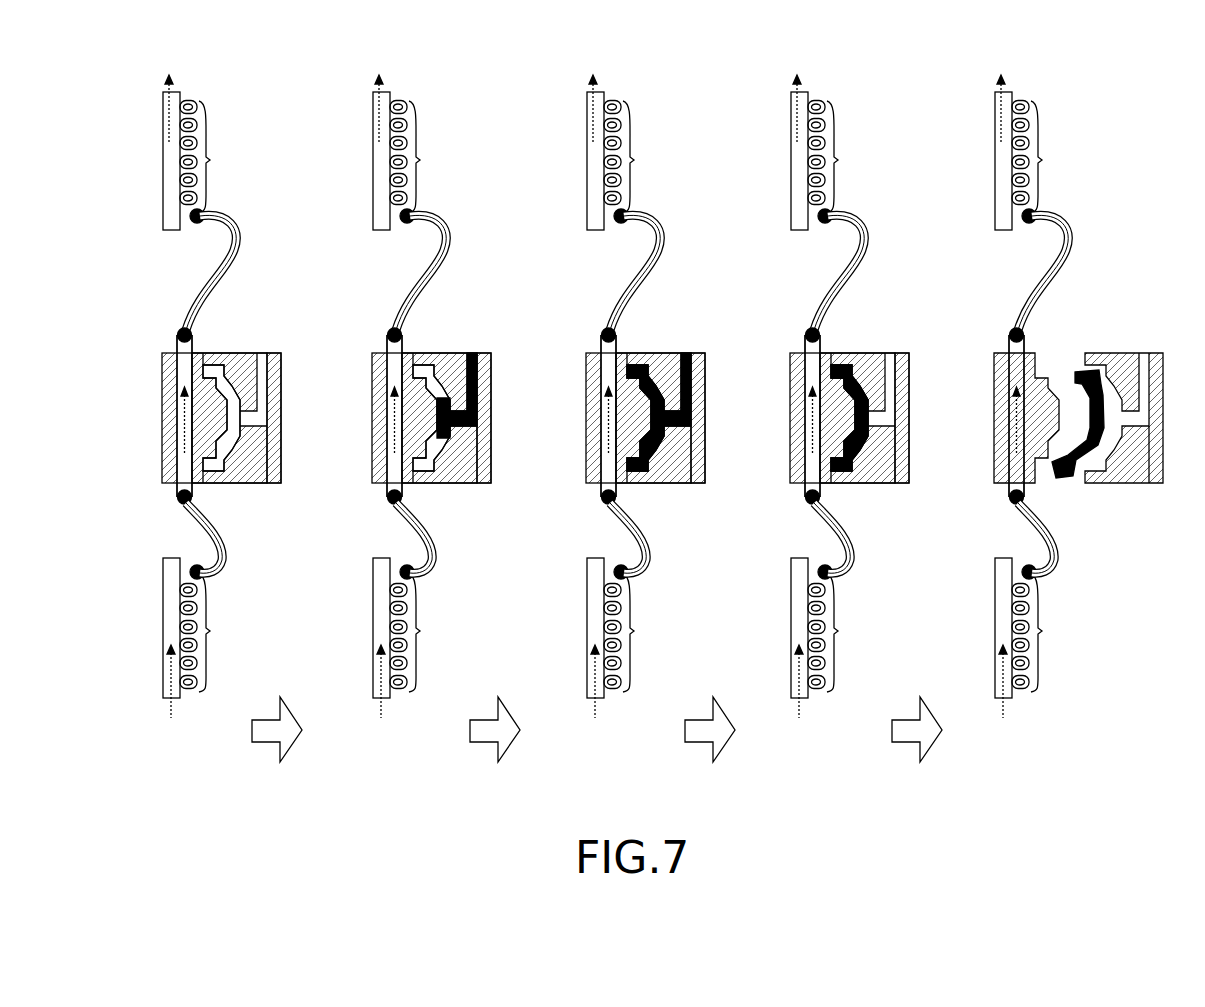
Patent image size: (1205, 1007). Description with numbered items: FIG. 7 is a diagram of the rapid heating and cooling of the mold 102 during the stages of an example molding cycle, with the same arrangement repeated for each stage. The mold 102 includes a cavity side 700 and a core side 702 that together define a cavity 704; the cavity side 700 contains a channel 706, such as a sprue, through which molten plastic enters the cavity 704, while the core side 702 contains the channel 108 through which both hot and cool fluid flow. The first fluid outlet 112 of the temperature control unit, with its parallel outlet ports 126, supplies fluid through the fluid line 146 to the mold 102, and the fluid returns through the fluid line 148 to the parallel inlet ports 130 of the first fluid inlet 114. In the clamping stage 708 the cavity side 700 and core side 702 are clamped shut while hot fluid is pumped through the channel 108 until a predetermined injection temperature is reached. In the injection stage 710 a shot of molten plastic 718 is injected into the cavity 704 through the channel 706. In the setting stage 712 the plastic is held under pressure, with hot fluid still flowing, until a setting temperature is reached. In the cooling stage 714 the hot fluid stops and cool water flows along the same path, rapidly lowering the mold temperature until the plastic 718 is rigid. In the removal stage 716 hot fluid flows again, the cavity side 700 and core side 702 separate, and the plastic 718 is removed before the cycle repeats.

The mold 102 is at (557, 416).
The channel 108 is at (180, 463).
The first fluid outlet 112 is at (557, 638).
The first fluid inlet 114 is at (559, 152).
The outlet ports 126 is at (638, 628).
The inlet ports 130 is at (631, 162).
The fluid line 146 is at (230, 557).
The fluid line 148 is at (230, 268).
The cavity side 700 is at (263, 465).
The core side 702 is at (168, 355).
The cavity 704 is at (222, 472).
The channel 706 is at (270, 354).
The clamping stage 708 is at (200, 778).
The injection stage 710 is at (405, 778).
The setting stage 712 is at (619, 778).
The cooling stage 714 is at (822, 778).
The removal stage 716 is at (1032, 778).
The molten plastic 718 is at (474, 352).